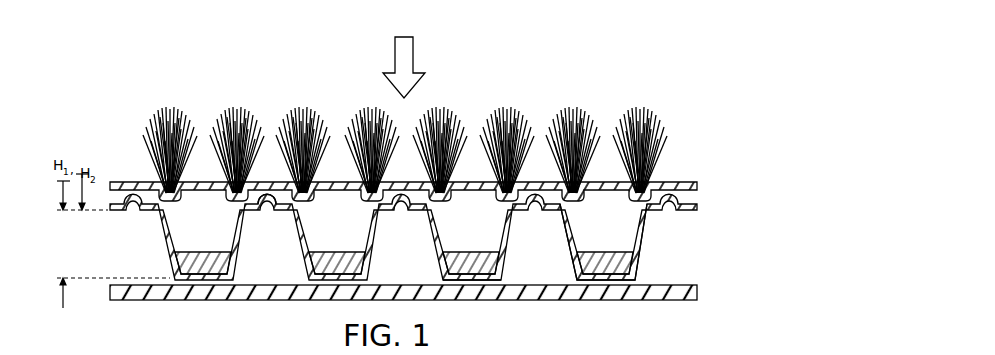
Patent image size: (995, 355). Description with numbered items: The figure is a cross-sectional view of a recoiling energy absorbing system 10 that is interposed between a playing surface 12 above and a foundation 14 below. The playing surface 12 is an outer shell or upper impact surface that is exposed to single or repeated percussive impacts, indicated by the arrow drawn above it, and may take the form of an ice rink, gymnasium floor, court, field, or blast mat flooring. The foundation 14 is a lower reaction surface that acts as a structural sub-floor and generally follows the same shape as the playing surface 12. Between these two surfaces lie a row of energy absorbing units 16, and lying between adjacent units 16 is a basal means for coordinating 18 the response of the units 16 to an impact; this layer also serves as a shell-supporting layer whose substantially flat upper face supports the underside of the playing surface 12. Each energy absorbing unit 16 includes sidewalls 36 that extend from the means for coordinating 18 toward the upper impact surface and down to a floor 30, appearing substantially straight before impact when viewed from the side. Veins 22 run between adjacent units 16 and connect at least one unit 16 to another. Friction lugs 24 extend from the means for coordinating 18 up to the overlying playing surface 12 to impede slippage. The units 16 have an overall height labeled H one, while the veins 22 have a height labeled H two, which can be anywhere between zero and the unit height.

The recoiling energy absorbing system 10 is at (434, 189).
The playing surface 12 is at (756, 113).
The foundation 14 is at (683, 300).
The energy absorbing unit 16 is at (197, 245).
The means for coordinating 18 is at (523, 208).
The vein 22 is at (608, 278).
The friction lug 24 is at (270, 196).
The floor 30 is at (481, 278).
The sidewall 36 is at (643, 239).